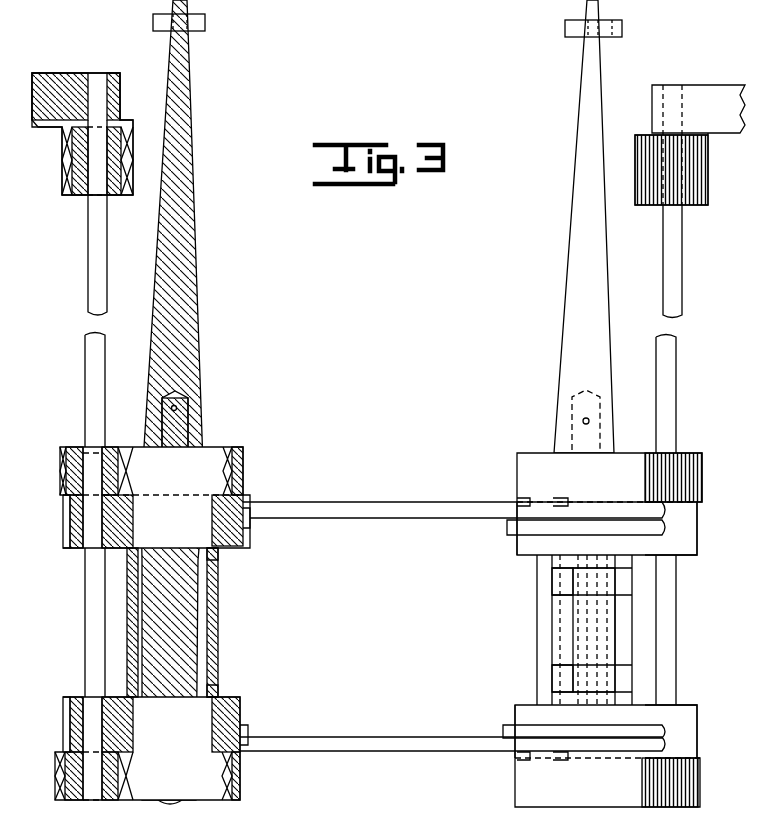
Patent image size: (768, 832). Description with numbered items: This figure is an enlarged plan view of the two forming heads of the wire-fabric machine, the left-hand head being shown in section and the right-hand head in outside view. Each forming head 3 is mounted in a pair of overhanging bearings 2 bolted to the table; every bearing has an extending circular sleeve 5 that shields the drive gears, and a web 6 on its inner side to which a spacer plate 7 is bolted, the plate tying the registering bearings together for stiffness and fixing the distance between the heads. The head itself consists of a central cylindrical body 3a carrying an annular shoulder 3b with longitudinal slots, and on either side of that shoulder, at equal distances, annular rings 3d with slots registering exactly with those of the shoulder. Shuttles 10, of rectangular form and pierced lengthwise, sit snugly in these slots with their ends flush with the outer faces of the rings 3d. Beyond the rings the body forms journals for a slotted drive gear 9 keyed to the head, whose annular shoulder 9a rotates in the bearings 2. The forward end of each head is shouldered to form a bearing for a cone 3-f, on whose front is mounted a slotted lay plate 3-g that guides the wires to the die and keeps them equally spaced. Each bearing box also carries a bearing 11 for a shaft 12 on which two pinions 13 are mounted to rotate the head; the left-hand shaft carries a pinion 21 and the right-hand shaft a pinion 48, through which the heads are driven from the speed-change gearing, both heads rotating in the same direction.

The cone 3-f is at (196, 225).
The central cylindrical body 3a is at (190, 629).
The forming head 3 is at (190, 452).
The slotted lay plate 3-g is at (205, 25).
The pinion 21 is at (62, 195).
The pinion 48 is at (690, 205).
The shaft 12 is at (85, 577).
The circular sleeve 5 is at (243, 477).
The pinion 13 is at (70, 447).
The drive gear 9 is at (135, 447).
The bearing 11 is at (70, 530).
The bearing 2 is at (242, 545).
The web 6 is at (250, 530).
The spacer plate 7 is at (402, 508).
The annular shoulder 9a is at (218, 560).
The shuttle 10 is at (127, 624).
The annular shoulder 3b is at (537, 628).
The annular ring 3d is at (552, 568).